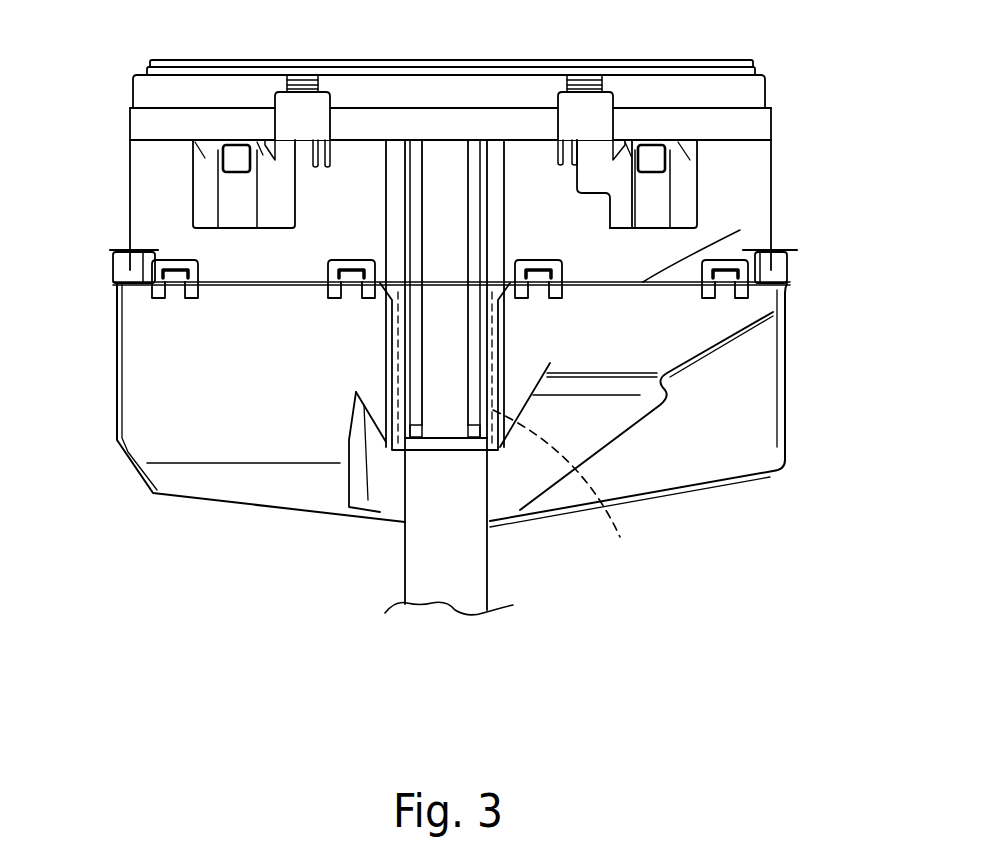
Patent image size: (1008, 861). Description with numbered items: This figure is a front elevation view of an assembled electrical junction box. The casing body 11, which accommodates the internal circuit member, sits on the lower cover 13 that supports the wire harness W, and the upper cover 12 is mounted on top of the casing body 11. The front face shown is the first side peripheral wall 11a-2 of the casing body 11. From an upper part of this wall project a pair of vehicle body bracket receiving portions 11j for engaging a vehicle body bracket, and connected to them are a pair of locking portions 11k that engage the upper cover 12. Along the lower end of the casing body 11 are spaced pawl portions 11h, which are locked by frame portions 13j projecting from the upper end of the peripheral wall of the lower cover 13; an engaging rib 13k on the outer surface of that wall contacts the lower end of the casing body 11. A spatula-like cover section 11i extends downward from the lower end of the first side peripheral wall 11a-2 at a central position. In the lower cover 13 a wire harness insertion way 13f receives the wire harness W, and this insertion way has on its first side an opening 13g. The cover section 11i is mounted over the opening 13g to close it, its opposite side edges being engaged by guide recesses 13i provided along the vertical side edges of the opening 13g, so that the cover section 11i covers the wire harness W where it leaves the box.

The casing body 11 is at (757, 155).
The upper cover 12 is at (750, 92).
The lower cover 13 is at (750, 378).
The locking portions 11k is at (283, 97).
The vehicle body bracket receiving portions 11j is at (207, 195).
The first side peripheral wall 11a-2 is at (740, 230).
The pawl portions 11h is at (352, 282).
The cover section 11i is at (447, 410).
The engaging rib 13k is at (790, 256).
The frame portions 13j is at (112, 275).
The opening 13g is at (633, 432).
The wire harness insertion way 13f is at (377, 415).
The guide recesses 13i is at (378, 448).
The wire harness W is at (465, 568).